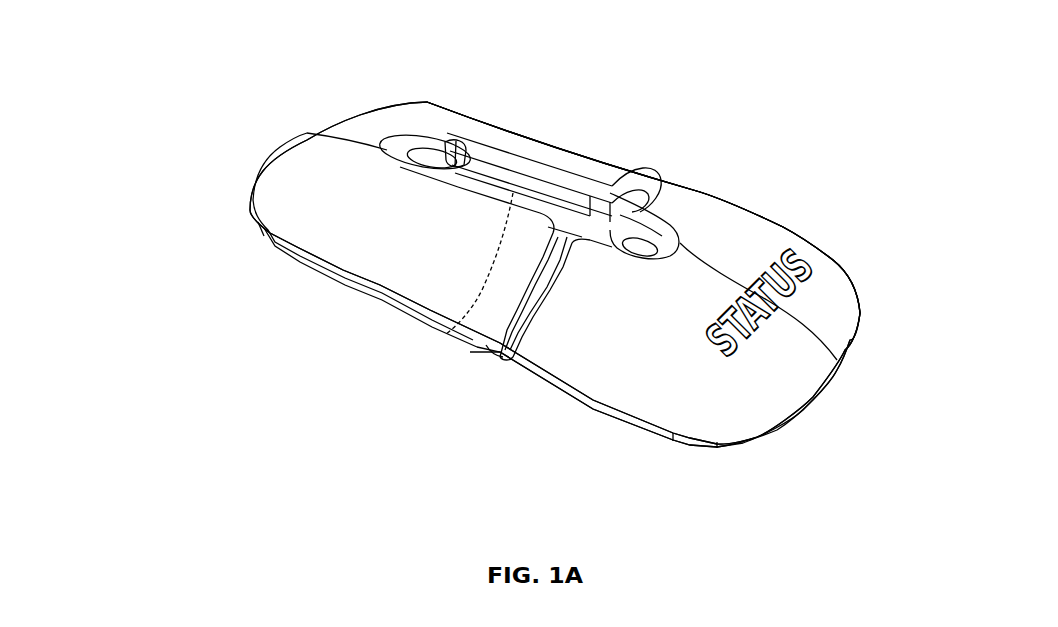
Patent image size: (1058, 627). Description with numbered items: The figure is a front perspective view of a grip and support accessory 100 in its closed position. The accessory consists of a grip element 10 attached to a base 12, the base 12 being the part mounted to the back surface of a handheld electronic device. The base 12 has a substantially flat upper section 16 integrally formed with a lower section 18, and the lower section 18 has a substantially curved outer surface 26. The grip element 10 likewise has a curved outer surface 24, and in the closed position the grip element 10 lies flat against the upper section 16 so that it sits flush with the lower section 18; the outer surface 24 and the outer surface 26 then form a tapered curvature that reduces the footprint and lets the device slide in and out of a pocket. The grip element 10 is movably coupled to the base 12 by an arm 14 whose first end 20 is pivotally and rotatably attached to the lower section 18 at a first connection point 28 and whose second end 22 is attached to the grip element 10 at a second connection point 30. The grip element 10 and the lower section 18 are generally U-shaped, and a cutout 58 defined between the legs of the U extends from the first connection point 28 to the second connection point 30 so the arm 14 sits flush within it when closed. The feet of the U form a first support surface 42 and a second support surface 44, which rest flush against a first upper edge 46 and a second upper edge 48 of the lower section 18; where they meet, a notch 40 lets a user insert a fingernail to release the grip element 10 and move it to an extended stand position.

The grip and support accessory 100 is at (166, 54).
The grip element 10 is at (527, 109).
The base 12 is at (803, 224).
The arm 14 is at (503, 189).
The upper section 16 is at (256, 224).
The lower section 18 is at (604, 404).
The first end 20 is at (649, 242).
The second end 22 is at (428, 158).
The outer surface 24 is at (359, 128).
The outer surface 26 is at (835, 286).
The first connection point 28 is at (650, 209).
The second connection point 30 is at (464, 140).
The notch 40 is at (483, 350).
The first support surface 42 is at (500, 314).
The second support surface 44 is at (631, 165).
The first upper edge 46 is at (507, 348).
The second upper edge 48 is at (654, 166).
The cutout 58 is at (555, 183).